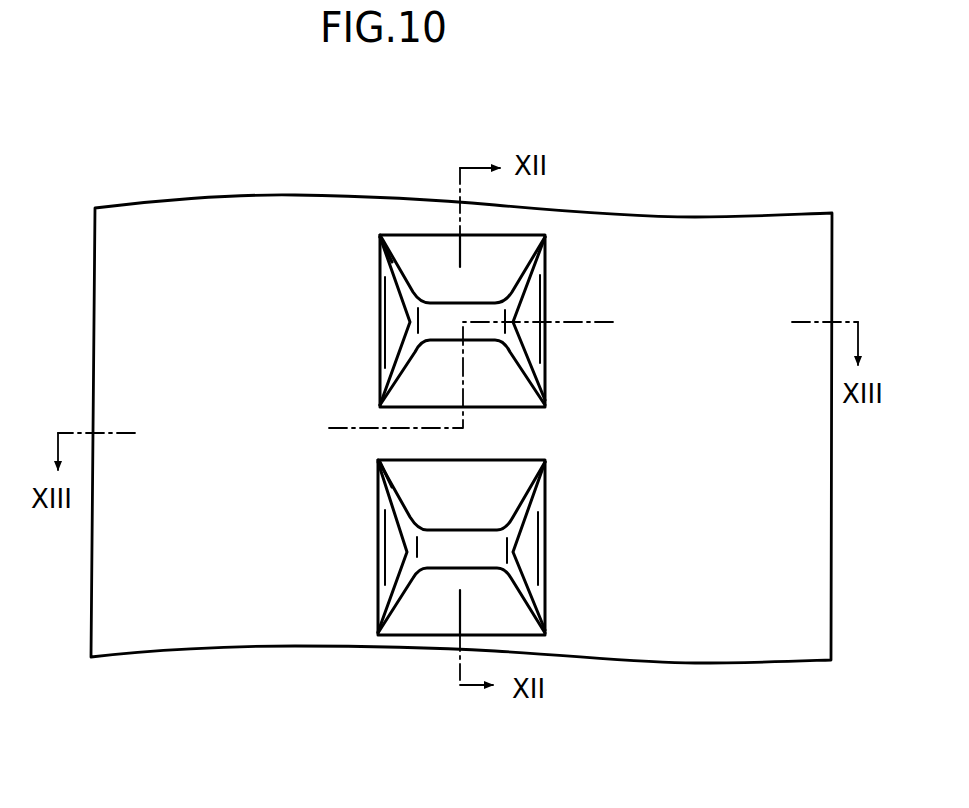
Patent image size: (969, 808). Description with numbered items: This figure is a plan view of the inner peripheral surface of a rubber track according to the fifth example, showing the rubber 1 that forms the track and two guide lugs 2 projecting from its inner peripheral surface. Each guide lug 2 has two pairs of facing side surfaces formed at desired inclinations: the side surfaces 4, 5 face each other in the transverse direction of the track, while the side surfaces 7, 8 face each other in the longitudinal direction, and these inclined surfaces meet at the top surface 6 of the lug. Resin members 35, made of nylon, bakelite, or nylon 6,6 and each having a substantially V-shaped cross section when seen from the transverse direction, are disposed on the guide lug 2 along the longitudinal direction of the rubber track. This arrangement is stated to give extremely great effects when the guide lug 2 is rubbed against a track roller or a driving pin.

The rubber 1 is at (765, 235).
The guide lug 2 is at (558, 249).
The resin member 35 is at (390, 493).
The side surface 4 is at (388, 327).
The side surface 5 is at (542, 306).
The top surface 6 is at (477, 313).
The side surface 7 is at (432, 247).
The side surface 8 is at (520, 400).